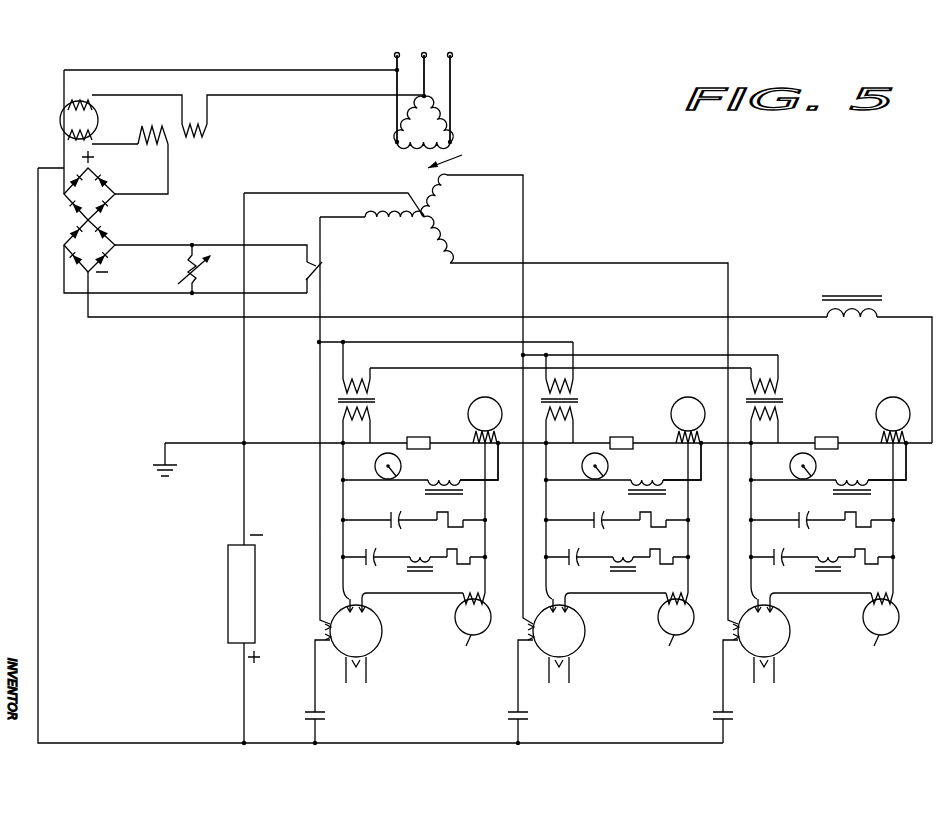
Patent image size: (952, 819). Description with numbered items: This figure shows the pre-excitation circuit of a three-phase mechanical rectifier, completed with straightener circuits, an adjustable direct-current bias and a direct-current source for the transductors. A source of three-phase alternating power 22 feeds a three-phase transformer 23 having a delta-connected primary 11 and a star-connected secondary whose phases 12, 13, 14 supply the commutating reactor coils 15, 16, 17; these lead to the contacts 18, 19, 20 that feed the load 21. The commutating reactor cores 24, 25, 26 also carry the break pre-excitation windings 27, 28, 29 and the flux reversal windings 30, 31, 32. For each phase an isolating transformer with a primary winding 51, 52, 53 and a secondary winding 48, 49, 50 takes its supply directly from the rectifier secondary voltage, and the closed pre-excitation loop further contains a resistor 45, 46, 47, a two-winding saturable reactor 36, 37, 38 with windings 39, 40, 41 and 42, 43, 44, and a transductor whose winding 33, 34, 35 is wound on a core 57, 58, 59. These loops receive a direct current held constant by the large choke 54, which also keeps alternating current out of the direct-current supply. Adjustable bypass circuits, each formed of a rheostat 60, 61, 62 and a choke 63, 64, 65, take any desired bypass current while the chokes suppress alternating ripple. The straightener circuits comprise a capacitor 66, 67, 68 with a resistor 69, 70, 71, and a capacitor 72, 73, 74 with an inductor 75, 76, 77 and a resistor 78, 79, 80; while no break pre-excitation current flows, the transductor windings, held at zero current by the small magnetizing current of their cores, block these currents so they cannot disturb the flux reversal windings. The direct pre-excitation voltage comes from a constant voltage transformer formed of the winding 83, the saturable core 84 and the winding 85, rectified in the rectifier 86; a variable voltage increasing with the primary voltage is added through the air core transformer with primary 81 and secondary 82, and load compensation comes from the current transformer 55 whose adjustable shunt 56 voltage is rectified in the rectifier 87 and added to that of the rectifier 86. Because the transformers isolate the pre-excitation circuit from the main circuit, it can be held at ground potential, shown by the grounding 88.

The delta connected primary 11 is at (430, 125).
The phase 12 is at (391, 230).
The phase 13 is at (440, 200).
The phase 14 is at (445, 240).
The commutating reactor coil 15 is at (324, 632).
The commutating reactor coil 16 is at (515, 632).
The commutating reactor coil 17 is at (720, 632).
The contact 18 is at (328, 716).
The contact 19 is at (535, 717).
The contact 20 is at (740, 717).
The load 21 is at (256, 600).
The source of three-phase A.-C. power 22 is at (448, 48).
The three phase transformer 23 is at (456, 156).
The commutating reactor core 24 is at (384, 634).
The commutating reactor core 25 is at (575, 631).
The commutating reactor core 26 is at (780, 631).
The break pre-excitation winding 27 is at (368, 604).
The break pre-excitation winding 28 is at (608, 603).
The break pre-excitation winding 29 is at (813, 603).
The flux reversal winding 30 is at (373, 672).
The flux reversal winding 31 is at (581, 670).
The flux reversal winding 32 is at (786, 670).
The transductor winding 33 is at (488, 596).
The transductor winding 34 is at (692, 597).
The transductor winding 35 is at (897, 597).
The two-winding saturable reactor 36 is at (492, 400).
The two-winding saturable reactor 37 is at (688, 405).
The two-winding saturable reactor 38 is at (893, 405).
The winding 39 is at (475, 446).
The winding 40 is at (677, 445).
The winding 41 is at (882, 445).
The winding 42 is at (498, 447).
The winding 43 is at (692, 461).
The winding 44 is at (897, 461).
The resistor 45 is at (424, 436).
The resistor 46 is at (624, 429).
The resistor 47 is at (829, 429).
The secondary winding 48 is at (372, 418).
The secondary winding 49 is at (578, 425).
The secondary winding 50 is at (783, 425).
The primary winding 51 is at (372, 390).
The primary winding 52 is at (578, 387).
The primary winding 53 is at (783, 387).
The large choke 54 is at (858, 318).
The current transformer 55 is at (325, 265).
The shunt 56 is at (178, 271).
The core 57 is at (473, 630).
The core 58 is at (676, 630).
The core 59 is at (881, 630).
The rheostat 60 is at (375, 467).
The rheostat 61 is at (582, 466).
The rheostat 62 is at (790, 466).
The choke 63 is at (452, 478).
The choke 64 is at (647, 477).
The choke 65 is at (852, 477).
The capacitor 66 is at (390, 517).
The capacitor 67 is at (582, 514).
The capacitor 68 is at (787, 514).
The resistor 69 is at (452, 516).
The resistor 70 is at (661, 512).
The resistor 71 is at (866, 512).
The capacitor 72 is at (363, 554).
The capacitor 73 is at (564, 548).
The capacitor 74 is at (769, 548).
The inductor 75 is at (428, 548).
The inductor 76 is at (623, 553).
The inductor 77 is at (828, 553).
The resistor 78 is at (449, 554).
The resistor 79 is at (661, 547).
The resistor 80 is at (866, 547).
The primary of air core transformer 81 is at (199, 146).
The secondary of air core transformer 82 is at (157, 124).
The winding 83 is at (62, 100).
The saturable core 84 is at (60, 120).
The winding 85 is at (62, 140).
The rectifier 86 is at (107, 181).
The rectifier 87 is at (110, 232).
The grounding 88 is at (132, 481).